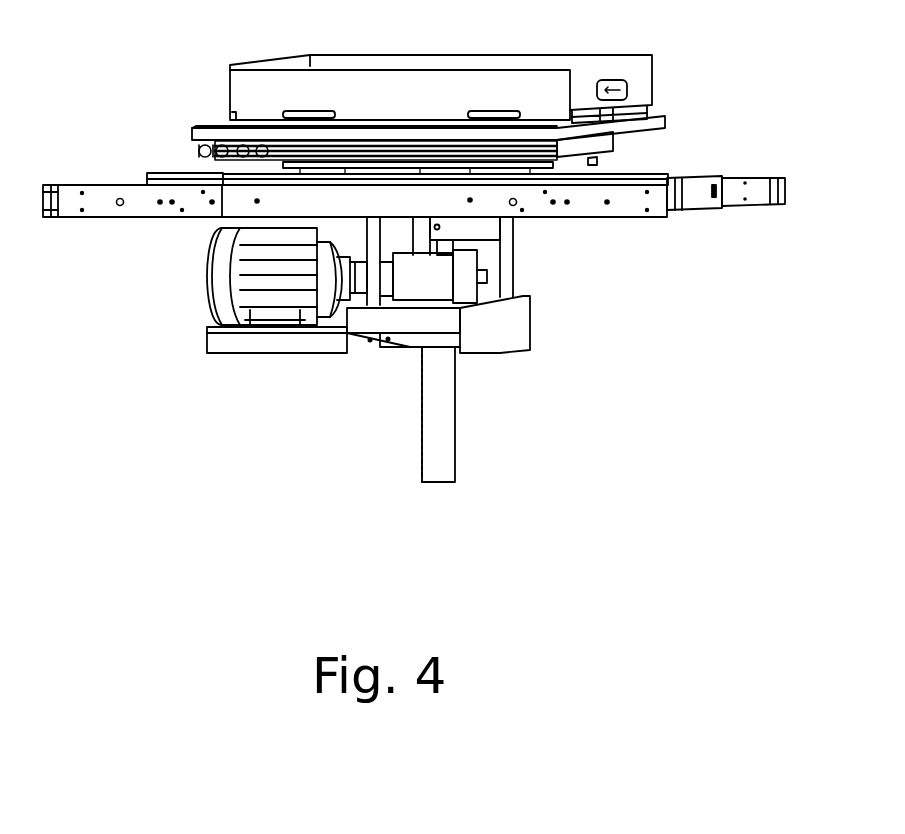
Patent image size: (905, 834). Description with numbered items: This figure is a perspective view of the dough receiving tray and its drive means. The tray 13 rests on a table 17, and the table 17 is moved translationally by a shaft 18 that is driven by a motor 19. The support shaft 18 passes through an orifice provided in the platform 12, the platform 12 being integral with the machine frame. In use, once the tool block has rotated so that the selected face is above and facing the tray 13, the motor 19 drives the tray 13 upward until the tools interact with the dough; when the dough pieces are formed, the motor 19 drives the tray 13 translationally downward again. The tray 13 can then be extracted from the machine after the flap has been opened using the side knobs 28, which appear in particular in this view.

The platform 12 is at (692, 197).
The tray 13 is at (655, 70).
The table 17 is at (666, 124).
The shaft 18 is at (440, 227).
The motor 19 is at (207, 298).
The side knobs 28 is at (627, 88).